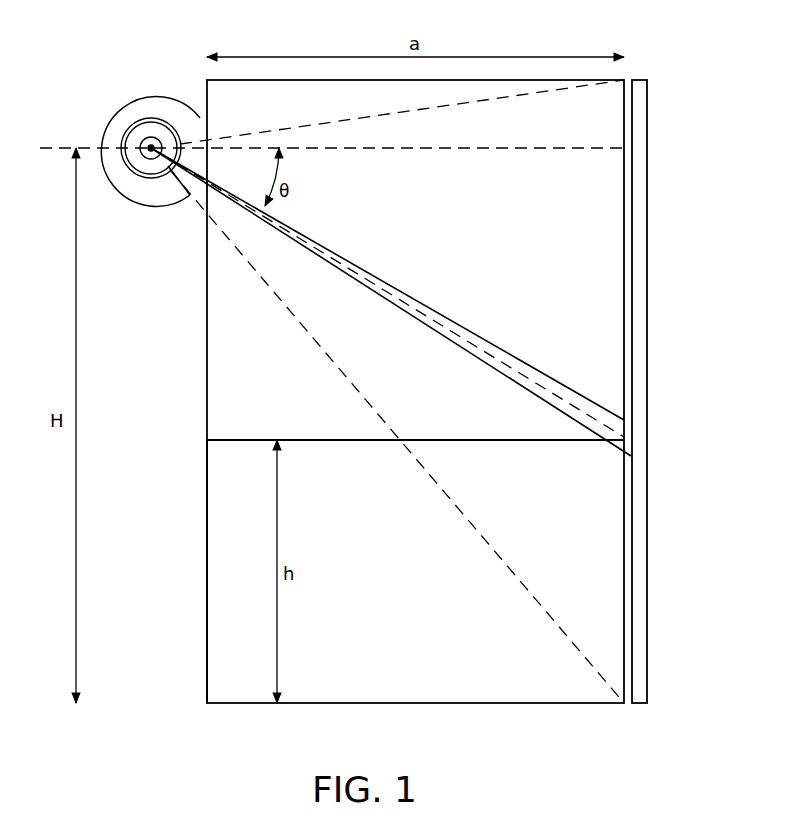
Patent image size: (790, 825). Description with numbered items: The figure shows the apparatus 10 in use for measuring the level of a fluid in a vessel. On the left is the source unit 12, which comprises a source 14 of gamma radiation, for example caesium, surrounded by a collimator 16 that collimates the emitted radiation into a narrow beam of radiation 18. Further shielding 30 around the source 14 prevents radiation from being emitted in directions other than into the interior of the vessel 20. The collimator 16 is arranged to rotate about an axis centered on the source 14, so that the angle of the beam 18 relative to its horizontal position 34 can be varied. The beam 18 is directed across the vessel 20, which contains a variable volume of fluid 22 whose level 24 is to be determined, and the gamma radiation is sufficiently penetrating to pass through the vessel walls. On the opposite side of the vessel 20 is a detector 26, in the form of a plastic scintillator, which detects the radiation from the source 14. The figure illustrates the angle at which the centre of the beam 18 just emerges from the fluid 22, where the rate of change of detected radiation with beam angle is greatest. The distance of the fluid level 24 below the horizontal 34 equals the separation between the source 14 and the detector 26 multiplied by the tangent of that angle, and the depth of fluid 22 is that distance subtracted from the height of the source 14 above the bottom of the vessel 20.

The apparatus 10 is at (691, 363).
The source unit 12 is at (132, 66).
The source 14 is at (156, 136).
The collimator 16 is at (124, 132).
The beam of radiation 18 is at (424, 310).
The vessel 20 is at (522, 705).
The fluid 22 is at (212, 554).
The level 24 is at (249, 428).
The detector 26 is at (648, 204).
The shielding 30 is at (119, 113).
The horizontal position 34 is at (541, 158).